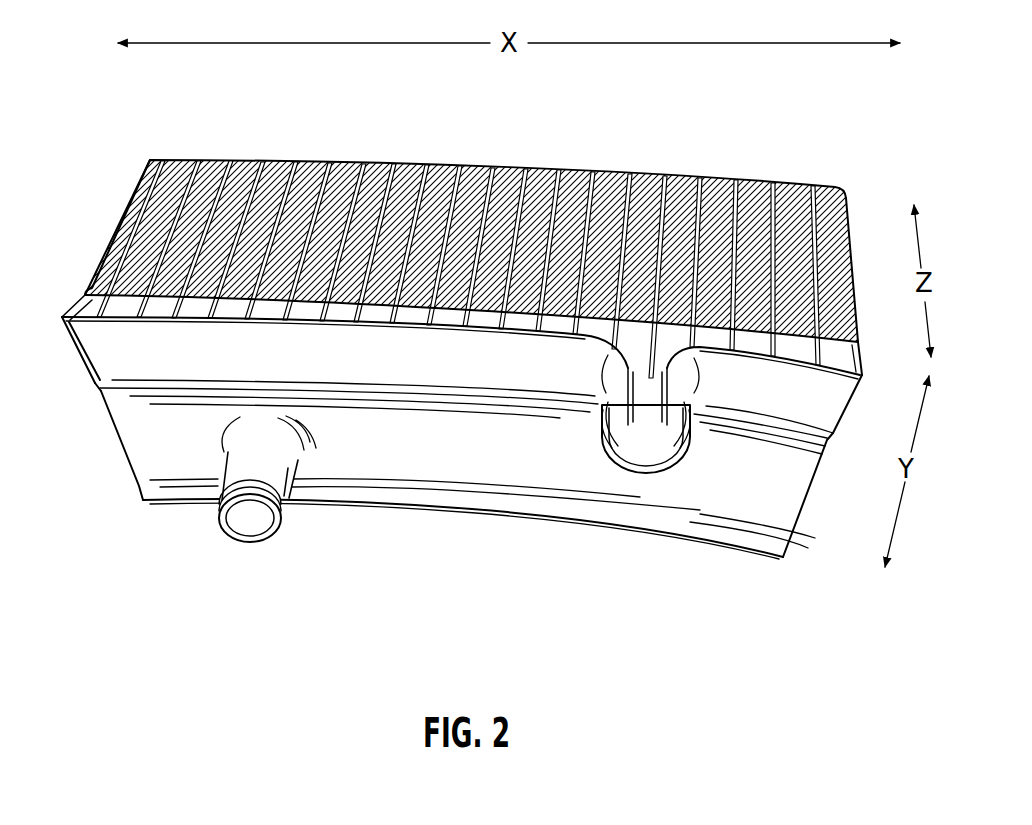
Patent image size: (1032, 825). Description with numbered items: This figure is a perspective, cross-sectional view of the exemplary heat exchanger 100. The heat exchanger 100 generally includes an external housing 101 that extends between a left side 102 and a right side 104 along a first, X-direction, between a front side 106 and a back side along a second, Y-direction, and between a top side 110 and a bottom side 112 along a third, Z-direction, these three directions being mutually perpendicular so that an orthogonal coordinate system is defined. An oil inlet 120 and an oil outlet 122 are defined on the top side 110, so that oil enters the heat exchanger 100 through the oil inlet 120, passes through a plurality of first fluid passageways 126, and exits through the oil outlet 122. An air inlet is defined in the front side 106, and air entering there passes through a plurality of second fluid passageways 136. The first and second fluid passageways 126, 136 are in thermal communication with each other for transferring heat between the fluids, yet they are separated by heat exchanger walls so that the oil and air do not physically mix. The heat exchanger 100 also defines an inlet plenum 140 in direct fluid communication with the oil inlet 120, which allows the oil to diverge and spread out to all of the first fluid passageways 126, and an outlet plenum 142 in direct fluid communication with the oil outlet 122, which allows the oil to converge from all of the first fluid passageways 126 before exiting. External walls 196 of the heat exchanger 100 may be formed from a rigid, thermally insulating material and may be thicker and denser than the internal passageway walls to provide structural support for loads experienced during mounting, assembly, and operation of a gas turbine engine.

The heat exchanger 100 is at (261, 624).
The external housing 101 is at (462, 457).
The left side 102 is at (98, 251).
The right side 104 is at (862, 268).
The front side 106 is at (473, 512).
The top side 110 is at (112, 340).
The bottom side 112 is at (318, 158).
The oil inlet 120 is at (645, 436).
The oil outlet 122 is at (251, 521).
The first fluid passageways 126 is at (468, 305).
The second fluid passageways 136 is at (516, 184).
The inlet plenum 140 is at (86, 300).
The outlet plenum 142 is at (146, 445).
The external walls 196 is at (806, 521).